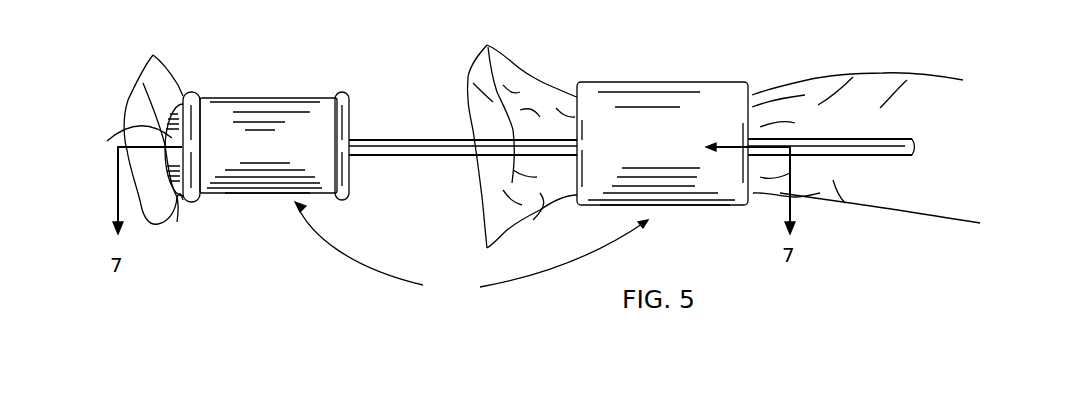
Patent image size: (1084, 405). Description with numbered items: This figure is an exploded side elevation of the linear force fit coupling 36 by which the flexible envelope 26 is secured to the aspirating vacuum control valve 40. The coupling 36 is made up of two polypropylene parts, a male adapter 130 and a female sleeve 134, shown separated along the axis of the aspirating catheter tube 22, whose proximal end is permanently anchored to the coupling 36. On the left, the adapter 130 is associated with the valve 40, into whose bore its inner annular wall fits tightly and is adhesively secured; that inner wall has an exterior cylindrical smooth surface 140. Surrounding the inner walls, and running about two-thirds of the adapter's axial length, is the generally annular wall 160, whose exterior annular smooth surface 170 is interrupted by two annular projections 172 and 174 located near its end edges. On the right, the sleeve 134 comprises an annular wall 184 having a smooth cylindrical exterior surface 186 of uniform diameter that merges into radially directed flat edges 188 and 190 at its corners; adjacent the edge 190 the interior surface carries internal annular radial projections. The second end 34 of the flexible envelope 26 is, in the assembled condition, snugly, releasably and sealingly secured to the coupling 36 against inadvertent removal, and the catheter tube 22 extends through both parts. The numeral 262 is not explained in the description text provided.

The aspirating catheter tube 22 is at (423, 145).
The flexible envelope 26 is at (806, 85).
The second end of flexible envelope 34 is at (502, 68).
The linear force fit coupling 36 is at (471, 248).
The aspirating vacuum control valve 40 is at (171, 70).
The male adapter 130 is at (300, 95).
The female sleeve 134 is at (630, 89).
The exterior cylindrical smooth surface 140 is at (125, 137).
The annular wall 160 is at (272, 194).
The exterior annular smooth surface 170 is at (277, 157).
The annular projection 172 is at (195, 92).
The annular projection 174 is at (344, 92).
The annular wall of sleeve 184 is at (682, 206).
The smooth cylindrical exterior surface 186 is at (673, 144).
The radially directed flat edge 188 is at (576, 126).
The radially directed flat edge 190 is at (752, 103).
The tooth root surface 262 is at (177, 222).